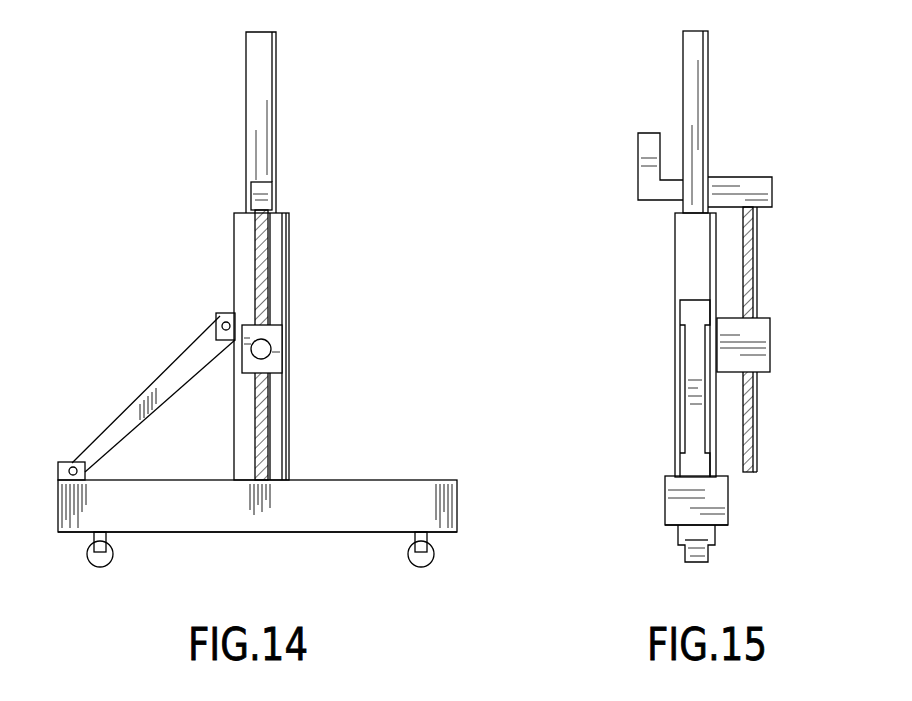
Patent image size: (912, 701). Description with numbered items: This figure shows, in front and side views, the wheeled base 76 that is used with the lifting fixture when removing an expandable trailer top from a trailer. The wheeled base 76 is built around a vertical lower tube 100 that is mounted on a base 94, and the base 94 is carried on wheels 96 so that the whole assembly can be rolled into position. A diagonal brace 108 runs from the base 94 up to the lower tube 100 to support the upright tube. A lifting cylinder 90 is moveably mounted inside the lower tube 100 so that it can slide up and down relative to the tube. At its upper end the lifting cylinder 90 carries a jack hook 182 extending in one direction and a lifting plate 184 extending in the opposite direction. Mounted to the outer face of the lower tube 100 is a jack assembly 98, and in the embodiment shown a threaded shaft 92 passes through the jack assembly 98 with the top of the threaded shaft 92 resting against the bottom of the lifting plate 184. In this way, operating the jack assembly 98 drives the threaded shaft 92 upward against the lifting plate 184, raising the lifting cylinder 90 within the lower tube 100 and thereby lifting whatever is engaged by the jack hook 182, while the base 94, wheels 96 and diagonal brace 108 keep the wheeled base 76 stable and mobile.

In FIG. 14, the wheeled base 76 is at (257, 534).
In FIG. 15, the wheeled base 76 is at (740, 508).
In FIG. 14, the lifting cylinder 90 is at (287, 109).
In FIG. 15, the lifting cylinder 90 is at (729, 122).
In FIG. 14, the threaded shaft 92 is at (311, 344).
In FIG. 15, the threaded shaft 92 is at (783, 339).
In FIG. 14, the base 94 is at (257, 559).
In FIG. 15, the base 94 is at (663, 504).
In FIG. 14, the wheels 96 is at (259, 567).
In FIG. 15, the wheels 96 is at (708, 571).
In FIG. 14, the jack assembly 98 is at (302, 349).
In FIG. 15, the jack assembly 98 is at (789, 337).
In FIG. 14, the vertical lower tube 100 is at (308, 346).
In FIG. 15, the vertical lower tube 100 is at (661, 345).
In FIG. 14, the diagonal brace 108 is at (146, 396).
In FIG. 15, the diagonal brace 108 is at (653, 388).
In FIG. 15, the jack hook 182 is at (628, 166).
In FIG. 14, the lifting plate 184 is at (306, 175).
In FIG. 15, the lifting plate 184 is at (762, 156).